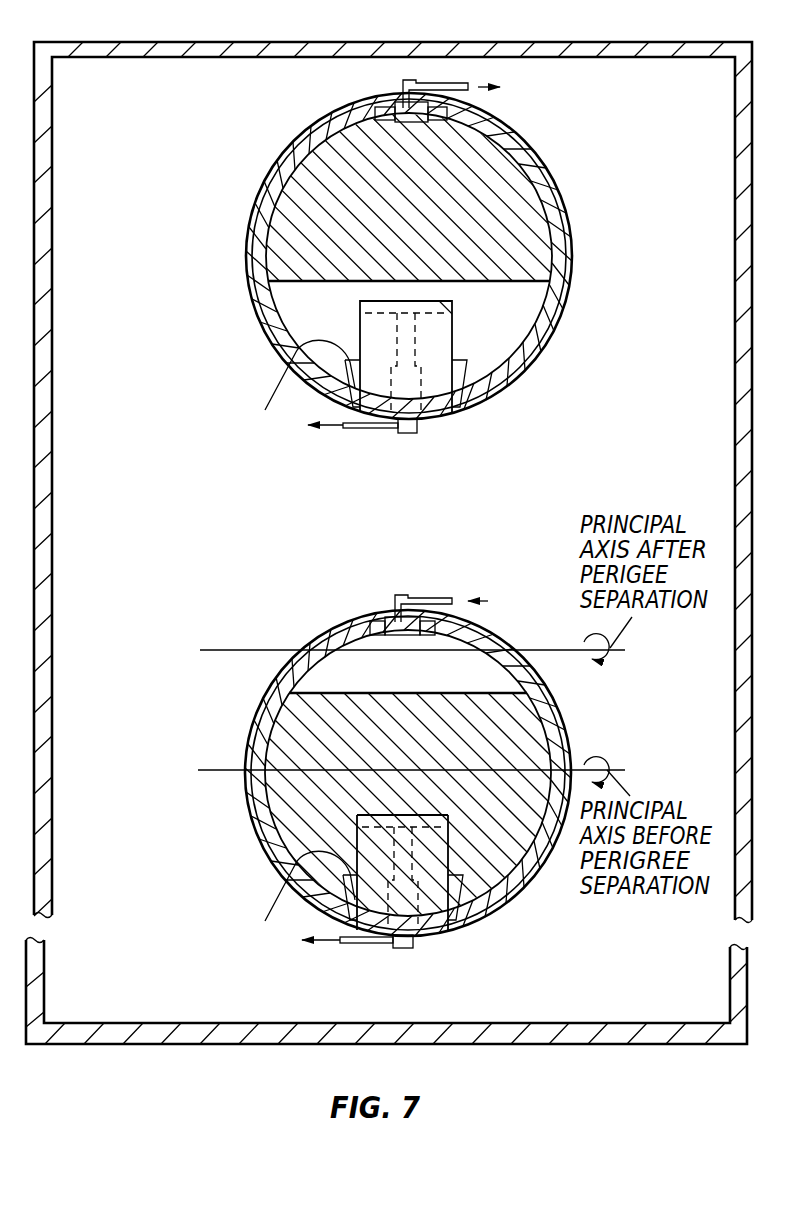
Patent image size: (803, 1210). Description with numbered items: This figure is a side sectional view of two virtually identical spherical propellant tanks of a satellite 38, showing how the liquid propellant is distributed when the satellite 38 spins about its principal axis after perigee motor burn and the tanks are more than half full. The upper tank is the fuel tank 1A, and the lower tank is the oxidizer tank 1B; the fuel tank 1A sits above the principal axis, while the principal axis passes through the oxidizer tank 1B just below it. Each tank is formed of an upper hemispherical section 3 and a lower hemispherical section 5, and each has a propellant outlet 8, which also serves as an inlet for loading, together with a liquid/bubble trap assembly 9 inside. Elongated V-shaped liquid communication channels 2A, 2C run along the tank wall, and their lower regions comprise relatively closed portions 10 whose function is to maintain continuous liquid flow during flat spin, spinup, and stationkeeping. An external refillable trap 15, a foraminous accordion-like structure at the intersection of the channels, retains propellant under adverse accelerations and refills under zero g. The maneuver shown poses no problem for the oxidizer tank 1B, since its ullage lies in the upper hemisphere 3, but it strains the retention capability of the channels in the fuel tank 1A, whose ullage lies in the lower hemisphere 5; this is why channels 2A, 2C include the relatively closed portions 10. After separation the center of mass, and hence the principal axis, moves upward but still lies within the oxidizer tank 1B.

The satellite 38 is at (538, 42).
The fuel tank 1A is at (548, 178).
The oxidizer tank 1B is at (248, 824).
The liquid communication channel 2A is at (296, 160).
The liquid communication channel 2C is at (512, 137).
The upper hemispherical section 3 is at (330, 634).
The lower hemispherical section 5 is at (531, 366).
The propellant outlet 8 is at (345, 433).
The liquid/bubble trap assembly 9 is at (460, 318).
The relatively closed portions 10 is at (282, 325).
The external refillable trap 15 is at (301, 648).